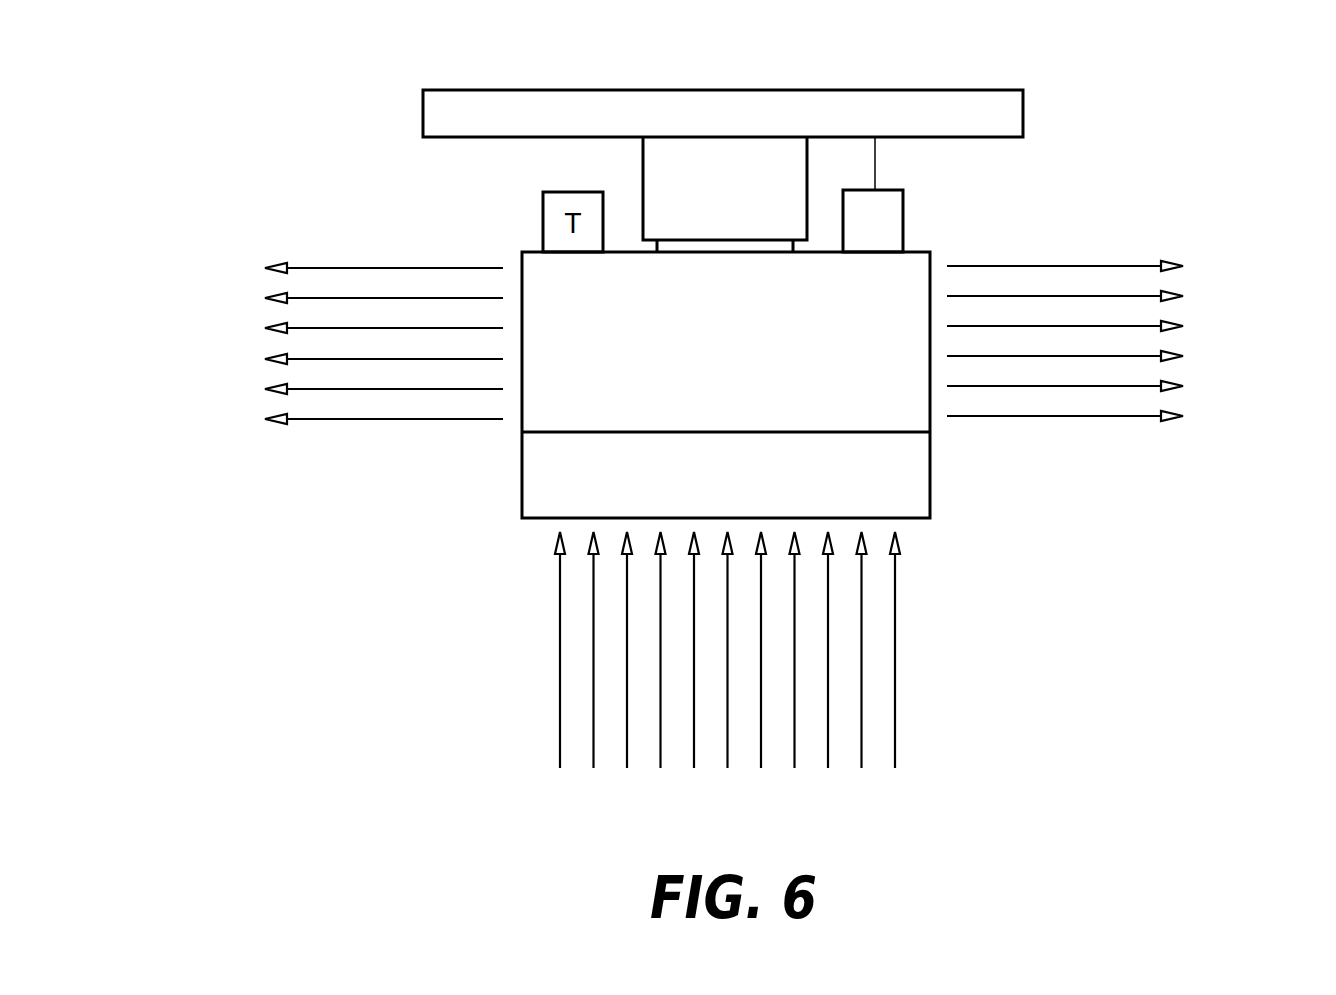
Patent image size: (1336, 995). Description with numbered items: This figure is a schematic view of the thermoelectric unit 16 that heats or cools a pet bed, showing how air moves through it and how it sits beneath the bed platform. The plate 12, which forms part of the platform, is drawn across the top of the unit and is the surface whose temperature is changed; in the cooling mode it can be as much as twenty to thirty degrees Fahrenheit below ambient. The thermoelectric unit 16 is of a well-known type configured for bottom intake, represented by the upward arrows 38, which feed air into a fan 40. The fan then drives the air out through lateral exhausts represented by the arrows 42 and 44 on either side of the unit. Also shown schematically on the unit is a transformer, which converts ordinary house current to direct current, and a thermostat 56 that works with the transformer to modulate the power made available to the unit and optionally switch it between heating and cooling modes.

The plate 12 is at (1000, 90).
The thermoelectric unit 16 is at (932, 255).
The air intake flow arrows 38 is at (897, 698).
The fan 40 is at (522, 476).
The lateral exhaust arrows 42 is at (320, 268).
The lateral exhaust arrows 44 is at (1110, 265).
The thermostat 56 is at (903, 200).